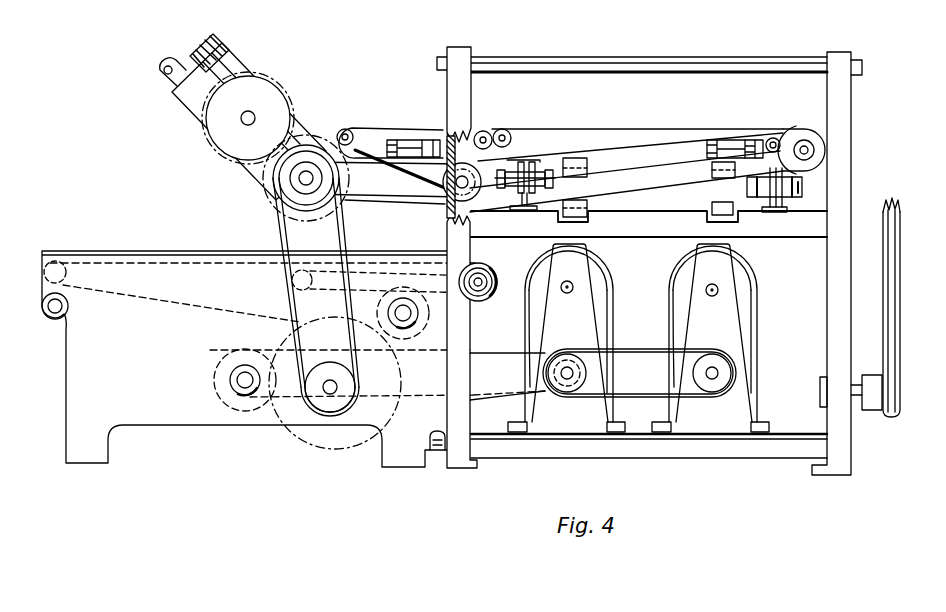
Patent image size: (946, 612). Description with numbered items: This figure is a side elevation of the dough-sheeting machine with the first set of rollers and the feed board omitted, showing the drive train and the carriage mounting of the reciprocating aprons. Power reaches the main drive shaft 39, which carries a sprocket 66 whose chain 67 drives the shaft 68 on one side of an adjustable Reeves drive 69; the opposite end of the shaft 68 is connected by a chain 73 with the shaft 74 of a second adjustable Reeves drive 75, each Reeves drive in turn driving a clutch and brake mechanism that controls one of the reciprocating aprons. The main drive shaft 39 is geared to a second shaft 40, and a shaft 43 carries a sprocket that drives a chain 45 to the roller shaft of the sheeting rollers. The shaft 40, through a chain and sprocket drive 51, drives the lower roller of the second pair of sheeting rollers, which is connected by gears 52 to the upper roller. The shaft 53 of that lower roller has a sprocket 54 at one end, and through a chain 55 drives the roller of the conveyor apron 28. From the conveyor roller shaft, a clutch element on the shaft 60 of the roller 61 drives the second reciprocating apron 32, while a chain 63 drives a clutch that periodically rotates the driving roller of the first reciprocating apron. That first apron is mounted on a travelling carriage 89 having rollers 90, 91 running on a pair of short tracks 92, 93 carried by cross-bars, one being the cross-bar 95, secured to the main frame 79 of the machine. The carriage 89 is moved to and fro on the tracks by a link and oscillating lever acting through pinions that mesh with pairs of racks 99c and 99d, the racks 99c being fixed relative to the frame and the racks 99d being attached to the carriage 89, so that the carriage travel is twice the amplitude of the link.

The conveyor apron 28 is at (390, 135).
The second reciprocating apron 32 is at (173, 265).
The main drive shaft 39 is at (245, 380).
The second shaft 40 is at (328, 388).
The shaft 43 is at (855, 395).
The chain 45 is at (890, 282).
The chain and sprocket drive 51 is at (288, 307).
The gears 52 is at (263, 181).
The shaft 53 is at (308, 176).
The sprocket 54 is at (300, 190).
The chain 55 is at (358, 165).
The shaft 60 is at (403, 312).
The roller 61 is at (430, 308).
The chain 63 is at (613, 147).
The sprocket 66 is at (217, 377).
The chain 67 is at (505, 328).
The shaft 68 is at (572, 373).
The adjustable Reeves drive 69 is at (610, 312).
The chain 73 is at (622, 352).
The shaft 74 is at (716, 372).
The second adjustable Reeves drive 75 is at (750, 317).
The main frame 79 is at (88, 372).
The travelling carriage 89 is at (547, 140).
The roller 90 is at (779, 202).
The roller 91 is at (587, 182).
The track 92 is at (763, 212).
The track 93 is at (520, 208).
The cross-bar 95 is at (663, 234).
The racks 99c is at (588, 203).
The racks 99d is at (693, 167).